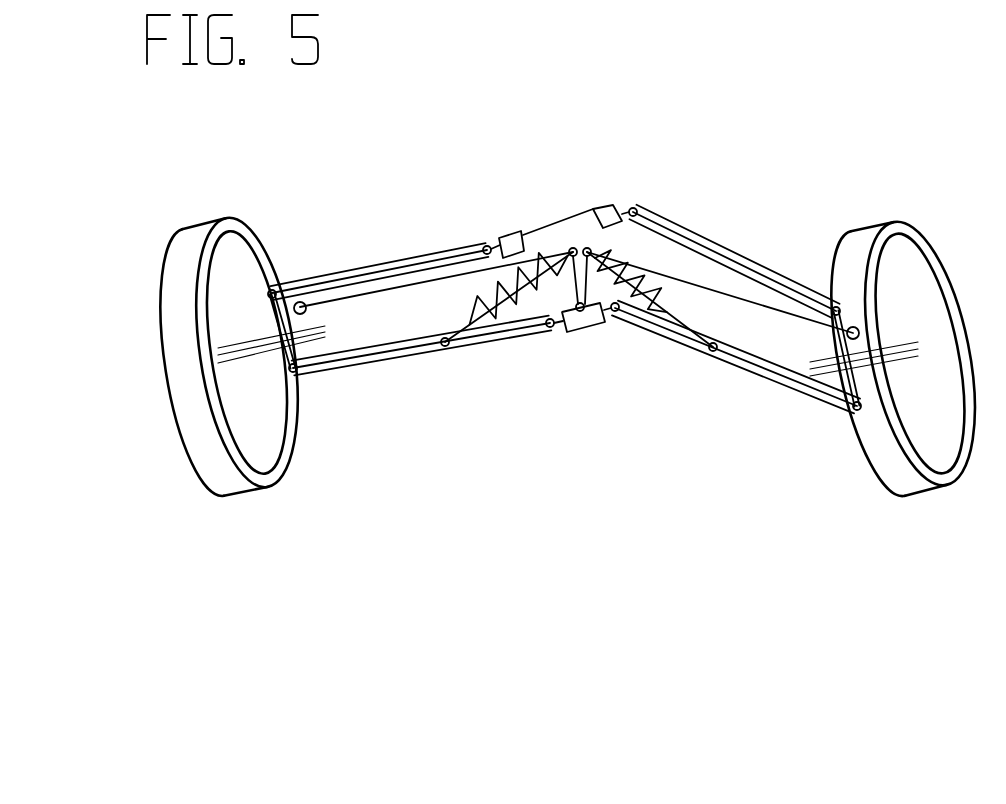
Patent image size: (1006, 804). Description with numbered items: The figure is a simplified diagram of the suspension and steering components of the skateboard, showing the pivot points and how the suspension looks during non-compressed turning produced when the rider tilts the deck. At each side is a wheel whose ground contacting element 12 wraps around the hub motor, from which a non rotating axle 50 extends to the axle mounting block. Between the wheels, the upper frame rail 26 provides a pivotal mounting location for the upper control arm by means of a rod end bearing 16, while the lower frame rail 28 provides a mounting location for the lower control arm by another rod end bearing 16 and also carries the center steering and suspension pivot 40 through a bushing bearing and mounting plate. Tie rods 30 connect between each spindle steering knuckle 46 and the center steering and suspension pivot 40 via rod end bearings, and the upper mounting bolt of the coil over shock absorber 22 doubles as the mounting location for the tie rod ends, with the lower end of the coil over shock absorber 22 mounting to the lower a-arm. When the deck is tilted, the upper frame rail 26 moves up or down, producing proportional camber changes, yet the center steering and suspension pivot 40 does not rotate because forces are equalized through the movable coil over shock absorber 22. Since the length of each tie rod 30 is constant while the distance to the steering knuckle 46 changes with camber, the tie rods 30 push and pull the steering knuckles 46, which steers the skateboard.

The ground contacting element 12 is at (856, 244).
The rod end bearing 16 is at (273, 290).
The spindle steering knuckle 46 is at (301, 302).
The center steering and suspension pivot 40 is at (586, 248).
The upper frame rail 26 is at (618, 220).
The tie rod 30 is at (721, 292).
The coil over shock absorber 22 is at (479, 326).
The lower frame rail 28 is at (575, 322).
The non rotating axle 50 is at (921, 345).